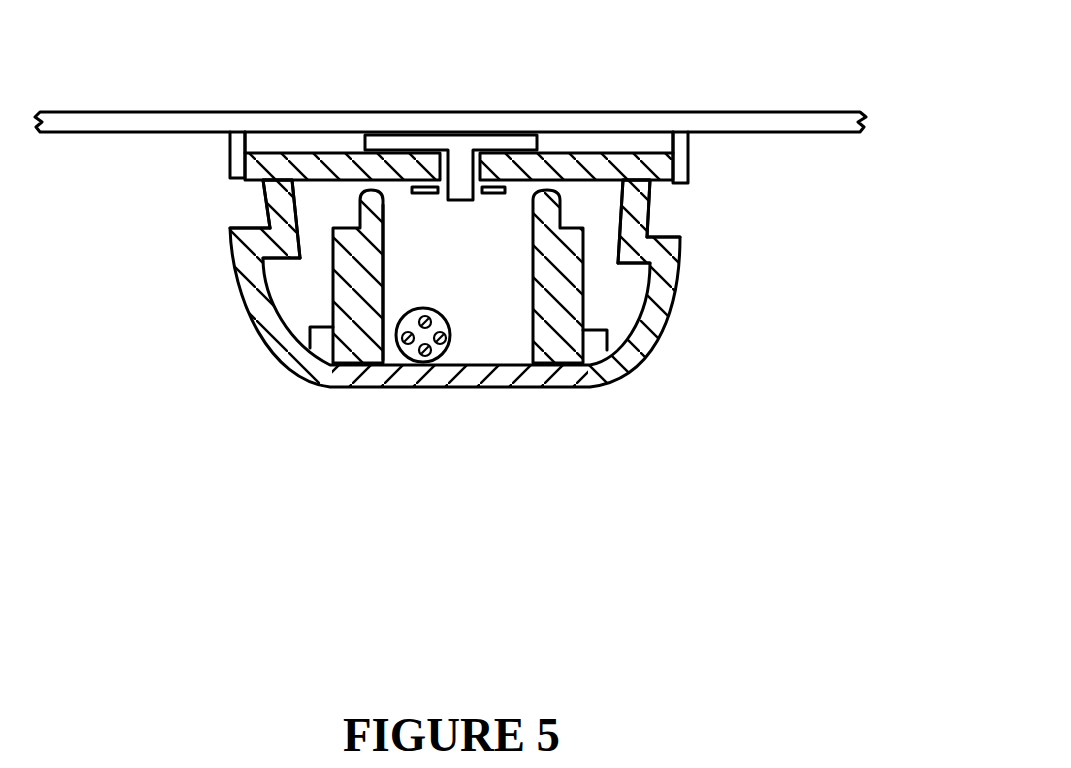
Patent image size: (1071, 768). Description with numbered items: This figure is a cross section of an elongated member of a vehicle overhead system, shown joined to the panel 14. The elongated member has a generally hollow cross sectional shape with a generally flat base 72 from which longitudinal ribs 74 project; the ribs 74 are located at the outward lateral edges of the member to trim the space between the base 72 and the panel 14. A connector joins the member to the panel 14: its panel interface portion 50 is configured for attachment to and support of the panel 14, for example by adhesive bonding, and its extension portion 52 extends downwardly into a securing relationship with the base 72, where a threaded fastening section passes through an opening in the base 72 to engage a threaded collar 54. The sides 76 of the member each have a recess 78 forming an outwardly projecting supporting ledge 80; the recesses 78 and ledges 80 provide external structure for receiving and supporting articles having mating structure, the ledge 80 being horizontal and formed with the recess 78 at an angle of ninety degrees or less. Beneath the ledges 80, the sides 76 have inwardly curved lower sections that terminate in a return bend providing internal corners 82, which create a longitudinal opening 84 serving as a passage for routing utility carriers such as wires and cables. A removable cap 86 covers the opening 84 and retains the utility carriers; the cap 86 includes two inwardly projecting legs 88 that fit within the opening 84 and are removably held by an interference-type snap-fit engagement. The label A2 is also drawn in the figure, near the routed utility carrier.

The panel 14 is at (812, 112).
The panel interface portion 50 is at (493, 135).
The extension portion 52 is at (450, 200).
The threaded collar 54 is at (492, 195).
The base 72 is at (296, 175).
The longitudinal ribs 74 is at (233, 143).
The sides 76 is at (247, 317).
The recess 78 is at (237, 206).
The supporting ledge 80 is at (237, 233).
The internal corners 82 is at (327, 377).
The longitudinal opening 84 is at (483, 326).
The removable cap 86 is at (407, 383).
The inwardly projecting legs 88 is at (383, 283).
The axis A2 is at (433, 310).